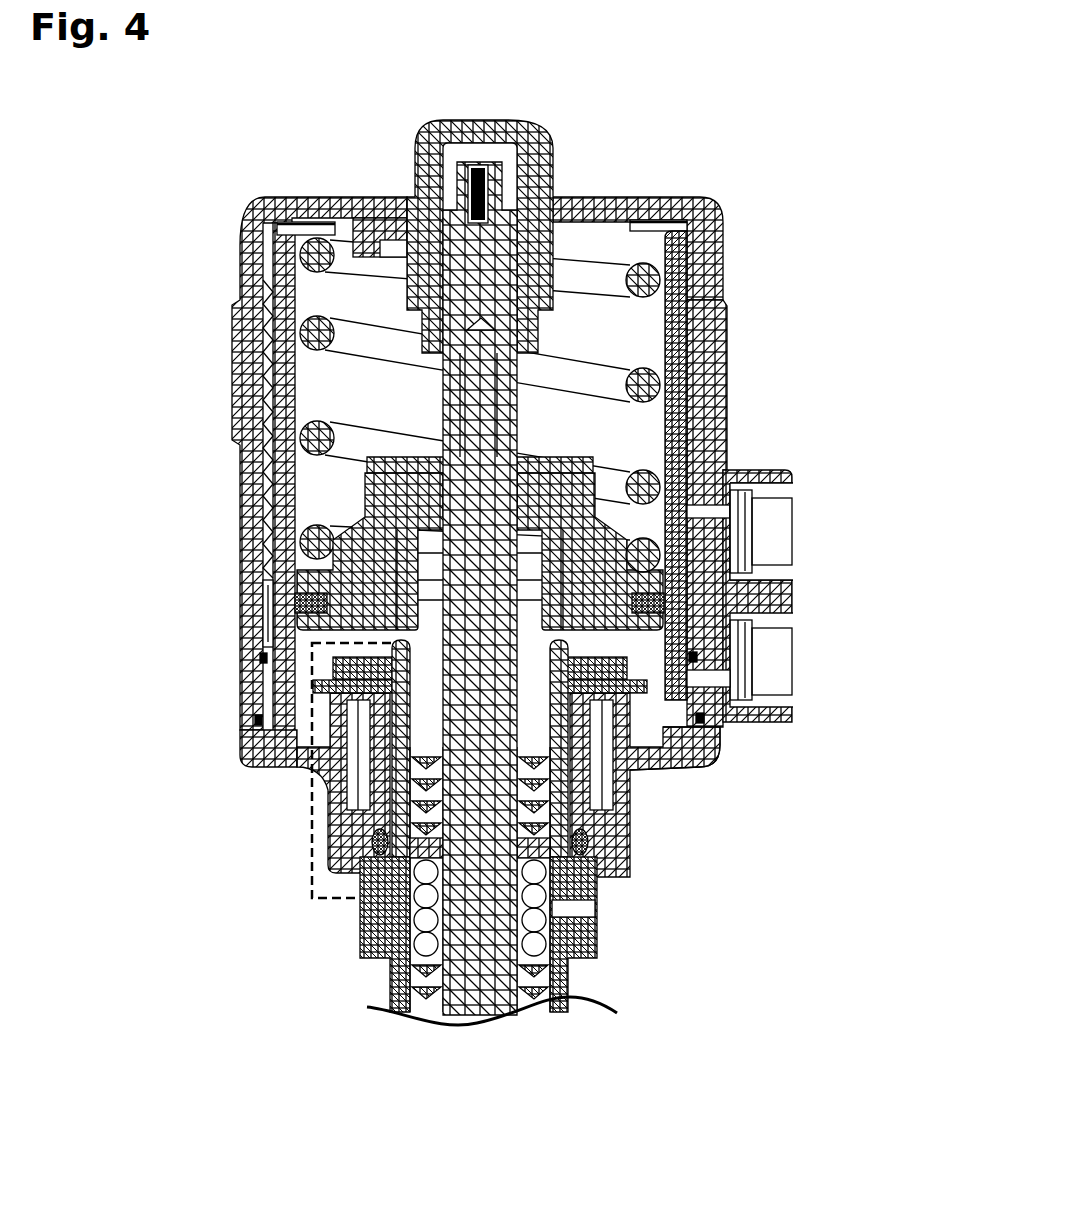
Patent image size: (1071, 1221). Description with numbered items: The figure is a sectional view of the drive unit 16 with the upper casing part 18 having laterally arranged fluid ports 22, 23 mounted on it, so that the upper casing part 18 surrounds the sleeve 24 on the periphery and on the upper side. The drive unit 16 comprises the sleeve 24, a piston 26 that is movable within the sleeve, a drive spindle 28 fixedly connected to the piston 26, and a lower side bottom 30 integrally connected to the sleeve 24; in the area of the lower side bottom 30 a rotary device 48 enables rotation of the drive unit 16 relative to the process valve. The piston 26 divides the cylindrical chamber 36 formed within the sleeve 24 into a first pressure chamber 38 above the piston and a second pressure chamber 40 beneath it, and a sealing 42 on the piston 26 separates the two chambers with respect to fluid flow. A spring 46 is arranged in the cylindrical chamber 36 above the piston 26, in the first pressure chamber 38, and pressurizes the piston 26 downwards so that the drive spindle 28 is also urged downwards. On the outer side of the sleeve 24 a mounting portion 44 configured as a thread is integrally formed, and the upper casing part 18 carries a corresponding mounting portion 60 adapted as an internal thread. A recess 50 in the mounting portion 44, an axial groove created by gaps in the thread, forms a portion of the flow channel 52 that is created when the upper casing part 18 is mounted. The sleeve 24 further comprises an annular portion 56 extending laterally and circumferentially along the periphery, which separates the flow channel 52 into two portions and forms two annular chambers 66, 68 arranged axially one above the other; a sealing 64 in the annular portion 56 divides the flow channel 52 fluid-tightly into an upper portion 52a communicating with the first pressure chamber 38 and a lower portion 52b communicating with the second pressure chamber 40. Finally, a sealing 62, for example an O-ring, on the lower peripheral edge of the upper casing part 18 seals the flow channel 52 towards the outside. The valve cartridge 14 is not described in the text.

The valve cartridge 14 is at (385, 897).
The drive unit 16 is at (690, 253).
The upper casing part 18 is at (262, 210).
The fluid port 22 is at (770, 527).
The fluid port 23 is at (773, 662).
The sleeve 24 is at (723, 303).
The piston 26 is at (290, 572).
The drive spindle 28 is at (483, 955).
The lower side bottom 30 is at (335, 795).
The cylindrical chamber 36 is at (603, 330).
The first pressure chamber 38 is at (640, 342).
The second pressure chamber 40 is at (640, 660).
The sealing 42 is at (296, 605).
The mounting portion 44 is at (262, 328).
The spring 46 is at (357, 258).
The rotary device 48 is at (262, 730).
The recess 50 is at (692, 410).
The flow channel 52 is at (692, 290).
The upper portion 52a is at (723, 455).
The lower portion 52b is at (723, 697).
The annular portion 56 is at (700, 652).
The mounting portion 60 is at (264, 370).
The sealing 62 is at (712, 725).
The sealing 64 is at (738, 640).
The annular chamber 66 is at (790, 565).
The annular chamber 68 is at (745, 718).